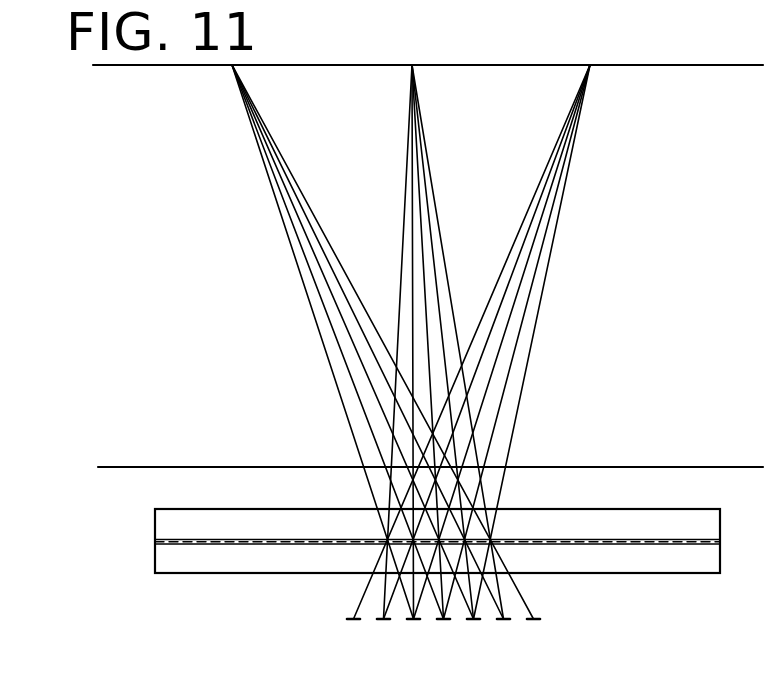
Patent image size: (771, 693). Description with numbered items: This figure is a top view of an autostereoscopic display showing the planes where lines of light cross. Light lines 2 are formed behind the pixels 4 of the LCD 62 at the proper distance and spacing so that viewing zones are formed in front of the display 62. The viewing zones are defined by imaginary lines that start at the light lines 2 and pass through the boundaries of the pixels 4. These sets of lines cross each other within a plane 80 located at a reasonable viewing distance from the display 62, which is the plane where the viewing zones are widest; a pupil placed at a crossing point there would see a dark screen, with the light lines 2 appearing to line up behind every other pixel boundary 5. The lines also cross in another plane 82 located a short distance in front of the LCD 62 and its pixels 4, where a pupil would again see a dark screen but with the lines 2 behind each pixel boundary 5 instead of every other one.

The plane 80 is at (673, 65).
The plane 82 is at (628, 465).
The LCD 62 is at (155, 541).
The pixels 4 is at (237, 546).
The pixel boundary 5 is at (298, 546).
The light lines 2 is at (472, 621).